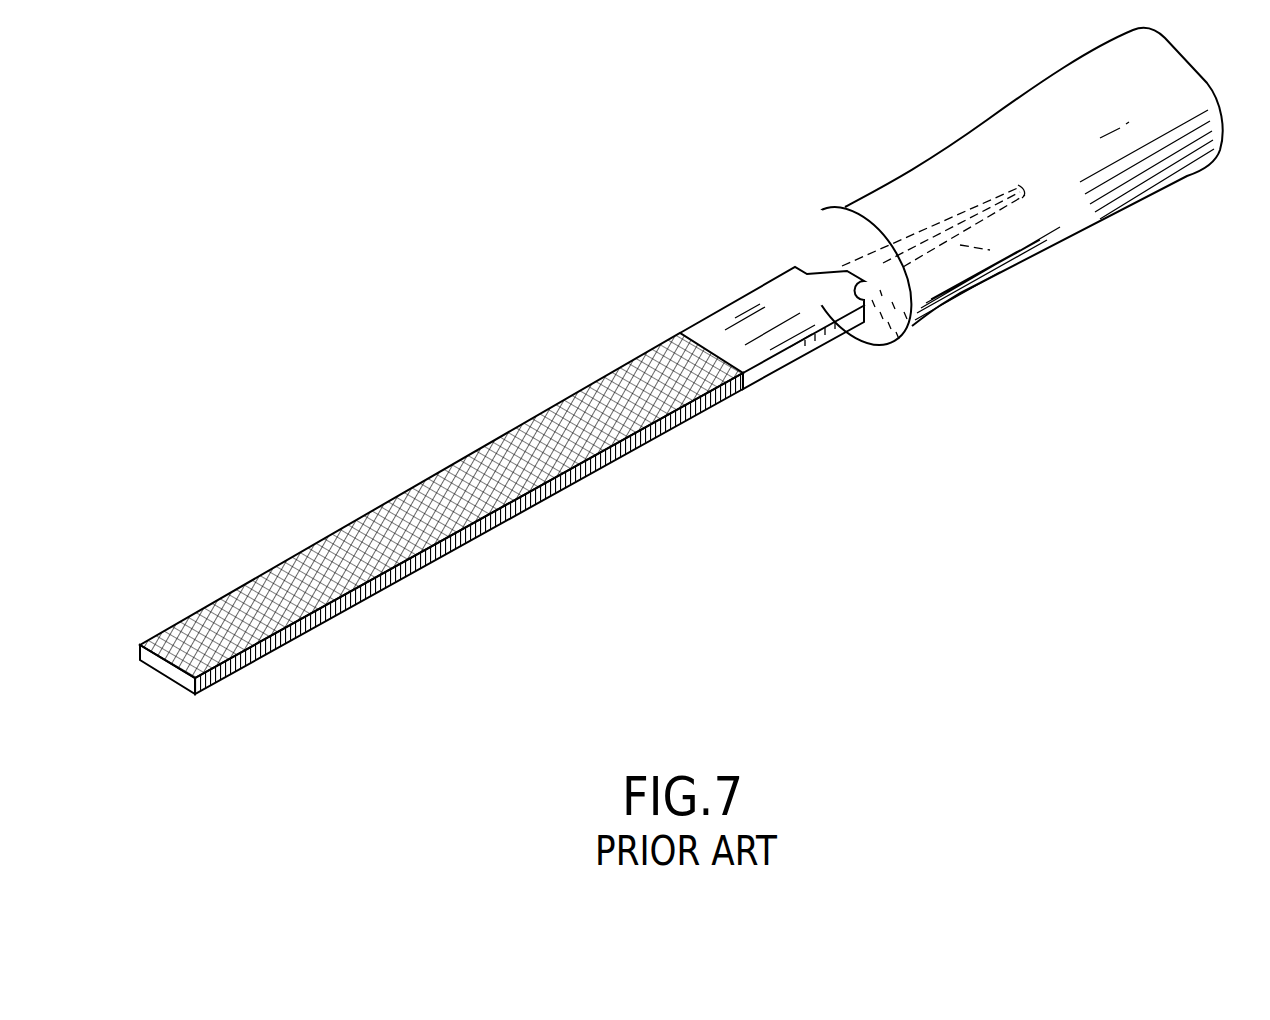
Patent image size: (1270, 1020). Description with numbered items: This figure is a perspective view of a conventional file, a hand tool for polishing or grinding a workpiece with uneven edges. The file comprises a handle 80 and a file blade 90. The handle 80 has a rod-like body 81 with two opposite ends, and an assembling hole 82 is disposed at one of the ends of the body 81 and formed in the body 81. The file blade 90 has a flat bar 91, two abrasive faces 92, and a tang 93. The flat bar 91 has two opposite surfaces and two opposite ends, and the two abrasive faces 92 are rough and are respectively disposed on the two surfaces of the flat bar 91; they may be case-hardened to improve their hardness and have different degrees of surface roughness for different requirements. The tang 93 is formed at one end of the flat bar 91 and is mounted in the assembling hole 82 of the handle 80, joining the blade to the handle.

The handle 80 is at (1001, 196).
The body 81 is at (1143, 182).
The assembling hole 82 is at (853, 268).
The file blade 90 is at (502, 453).
The flat bar 91 is at (772, 311).
The abrasive faces 92 is at (655, 438).
The tang 93 is at (932, 248).